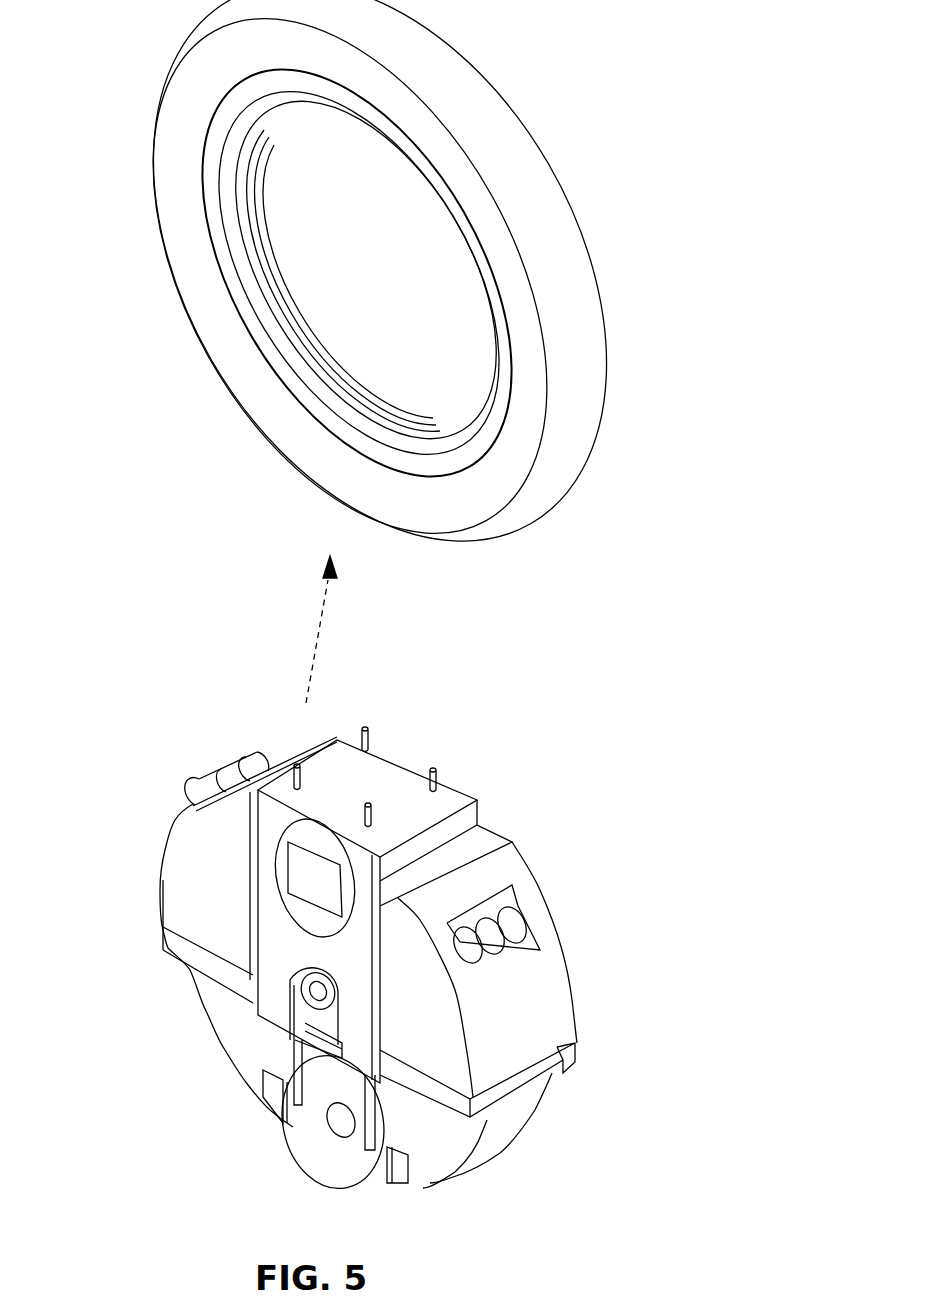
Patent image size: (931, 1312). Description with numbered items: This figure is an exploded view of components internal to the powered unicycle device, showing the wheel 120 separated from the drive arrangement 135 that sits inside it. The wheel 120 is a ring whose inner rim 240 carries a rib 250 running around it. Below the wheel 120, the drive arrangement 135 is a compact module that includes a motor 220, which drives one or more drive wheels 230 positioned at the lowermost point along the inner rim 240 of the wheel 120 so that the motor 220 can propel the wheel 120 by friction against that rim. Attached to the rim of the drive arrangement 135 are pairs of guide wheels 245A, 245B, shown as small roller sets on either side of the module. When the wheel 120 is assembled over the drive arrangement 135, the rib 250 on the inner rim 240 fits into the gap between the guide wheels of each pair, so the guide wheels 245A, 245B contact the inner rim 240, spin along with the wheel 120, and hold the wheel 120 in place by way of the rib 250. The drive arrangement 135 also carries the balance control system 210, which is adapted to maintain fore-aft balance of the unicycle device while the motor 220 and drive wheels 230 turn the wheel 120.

The wheel 120 is at (266, 413).
The drive arrangement 135 is at (130, 781).
The balance control system 210 is at (323, 867).
The motor 220 is at (222, 1007).
The drive wheels 230 is at (313, 1137).
The inner rim 240 is at (358, 437).
The guide wheels 245A is at (533, 930).
The guide wheels 245B is at (240, 763).
The rib 250 is at (247, 232).